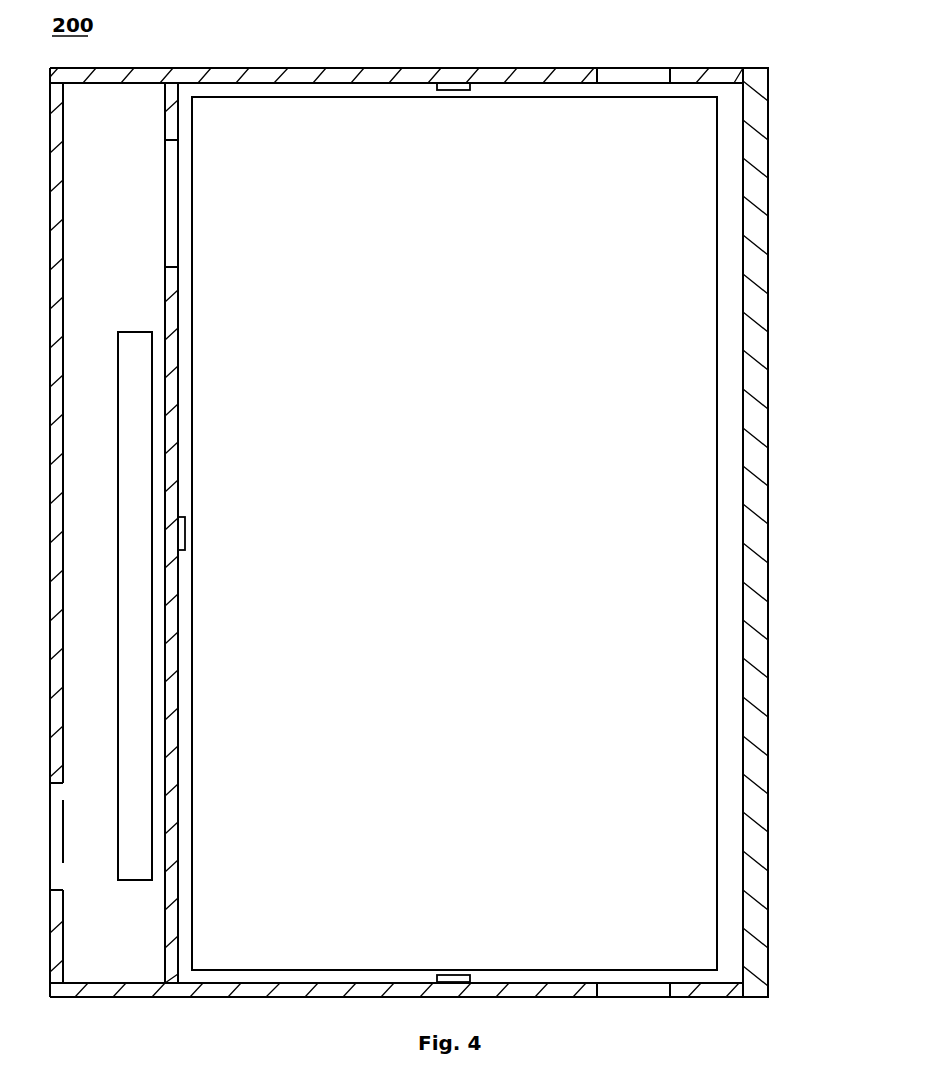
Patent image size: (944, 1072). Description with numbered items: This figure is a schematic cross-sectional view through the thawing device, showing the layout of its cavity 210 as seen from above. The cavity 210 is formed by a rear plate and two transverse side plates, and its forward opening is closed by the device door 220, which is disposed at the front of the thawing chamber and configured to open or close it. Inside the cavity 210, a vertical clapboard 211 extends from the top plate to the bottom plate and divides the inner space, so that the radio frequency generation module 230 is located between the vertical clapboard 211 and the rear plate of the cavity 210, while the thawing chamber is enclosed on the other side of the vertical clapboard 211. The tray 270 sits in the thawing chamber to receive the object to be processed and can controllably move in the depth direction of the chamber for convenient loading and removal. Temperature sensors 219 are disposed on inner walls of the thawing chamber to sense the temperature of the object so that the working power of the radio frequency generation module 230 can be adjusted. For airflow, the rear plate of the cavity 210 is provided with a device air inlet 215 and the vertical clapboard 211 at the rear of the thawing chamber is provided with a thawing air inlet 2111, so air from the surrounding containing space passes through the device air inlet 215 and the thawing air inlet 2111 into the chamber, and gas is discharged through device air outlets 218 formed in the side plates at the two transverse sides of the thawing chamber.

The cavity 210 is at (335, 78).
The vertical clapboard 211 is at (172, 345).
The thawing air inlet 2111 is at (167, 215).
The device air inlet 215 is at (55, 872).
The device air outlet 218 is at (608, 78).
The temperature sensor 219 is at (450, 88).
The device door 220 is at (752, 548).
The radio frequency generation module 230 is at (135, 655).
The tray 270 is at (680, 748).